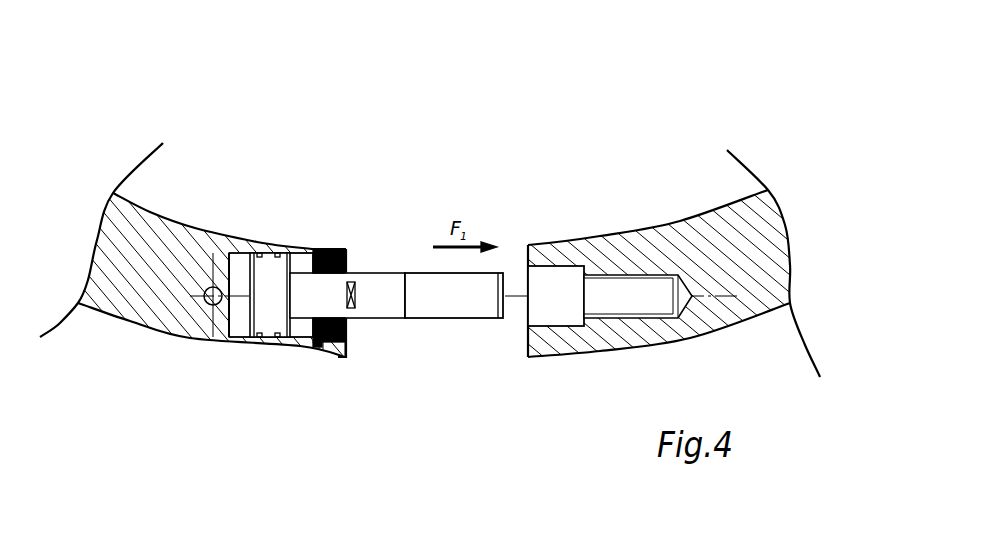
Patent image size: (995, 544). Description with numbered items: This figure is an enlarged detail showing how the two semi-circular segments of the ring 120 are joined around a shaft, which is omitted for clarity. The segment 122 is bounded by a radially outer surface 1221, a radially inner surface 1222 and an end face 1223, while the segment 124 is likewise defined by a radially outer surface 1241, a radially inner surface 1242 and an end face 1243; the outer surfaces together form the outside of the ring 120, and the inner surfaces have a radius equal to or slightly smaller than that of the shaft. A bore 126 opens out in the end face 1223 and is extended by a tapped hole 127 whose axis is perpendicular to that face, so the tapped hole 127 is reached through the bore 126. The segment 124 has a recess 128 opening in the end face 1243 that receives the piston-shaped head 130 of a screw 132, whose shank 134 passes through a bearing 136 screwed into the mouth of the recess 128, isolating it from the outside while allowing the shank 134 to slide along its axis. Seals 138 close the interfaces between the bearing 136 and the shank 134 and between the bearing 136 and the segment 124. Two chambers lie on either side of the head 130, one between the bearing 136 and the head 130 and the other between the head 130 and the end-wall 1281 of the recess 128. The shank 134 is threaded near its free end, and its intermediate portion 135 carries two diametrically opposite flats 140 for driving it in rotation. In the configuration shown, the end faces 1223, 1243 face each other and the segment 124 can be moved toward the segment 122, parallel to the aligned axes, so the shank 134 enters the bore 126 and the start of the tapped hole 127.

The ring 120 is at (633, 105).
The segment 122 is at (779, 213).
The radially outer surface 1221 is at (690, 338).
The radially inner surface 1222 is at (677, 222).
The end face 1223 is at (527, 341).
The segment 124 is at (110, 287).
The radially outer surface 1241 is at (119, 316).
The radially inner surface 1242 is at (183, 214).
The end face 1243 is at (349, 353).
The bore 126 is at (542, 287).
The tapped hole 127 is at (645, 283).
The recess 128 is at (302, 331).
The end-wall 1281 is at (233, 275).
The head 130 is at (356, 225).
The screw 132 is at (376, 225).
The shank 134 is at (371, 283).
The intermediate portion 135 is at (385, 307).
The bearing 136 is at (347, 327).
The seals 138 is at (334, 345).
The flats 140 is at (351, 282).